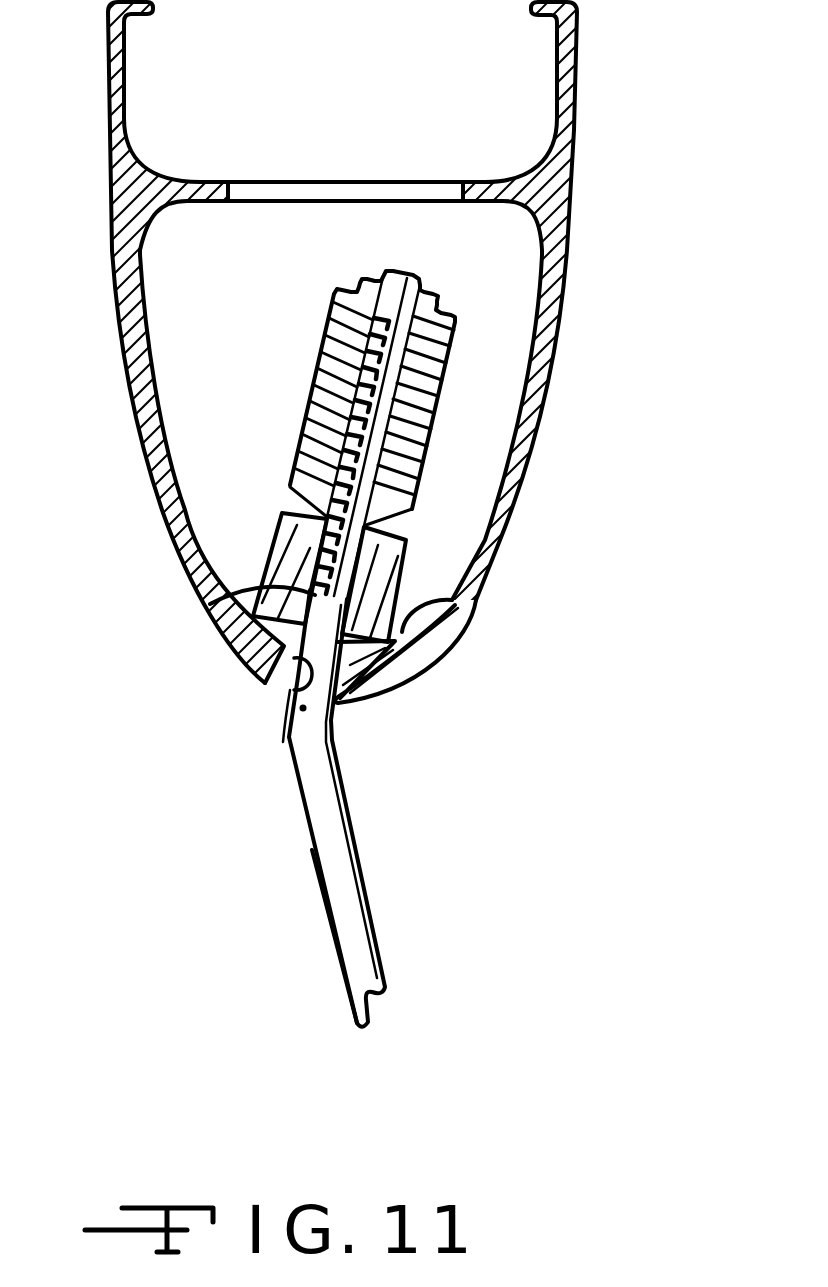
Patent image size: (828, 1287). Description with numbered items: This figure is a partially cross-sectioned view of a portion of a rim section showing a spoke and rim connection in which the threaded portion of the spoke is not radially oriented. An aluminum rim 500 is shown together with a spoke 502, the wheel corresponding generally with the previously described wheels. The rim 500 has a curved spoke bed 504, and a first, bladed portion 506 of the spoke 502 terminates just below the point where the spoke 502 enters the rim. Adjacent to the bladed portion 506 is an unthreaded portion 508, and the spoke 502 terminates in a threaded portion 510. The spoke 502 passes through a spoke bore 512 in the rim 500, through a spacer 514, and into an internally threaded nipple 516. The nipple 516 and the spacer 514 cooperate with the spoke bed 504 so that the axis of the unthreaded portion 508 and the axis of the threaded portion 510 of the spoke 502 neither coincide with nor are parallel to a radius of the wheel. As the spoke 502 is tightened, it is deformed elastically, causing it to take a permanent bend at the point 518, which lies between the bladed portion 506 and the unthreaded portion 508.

The rim 500 is at (536, 449).
The spoke 502 is at (364, 834).
The curved spoke bed 504 is at (465, 603).
The bladed portion 506 is at (318, 873).
The unthreaded portion 508 is at (210, 604).
The threaded portion 510 is at (405, 271).
The spoke bore 512 is at (292, 703).
The spacer 514 is at (403, 572).
The internally threaded nipple 516 is at (455, 355).
The point 518 is at (302, 712).